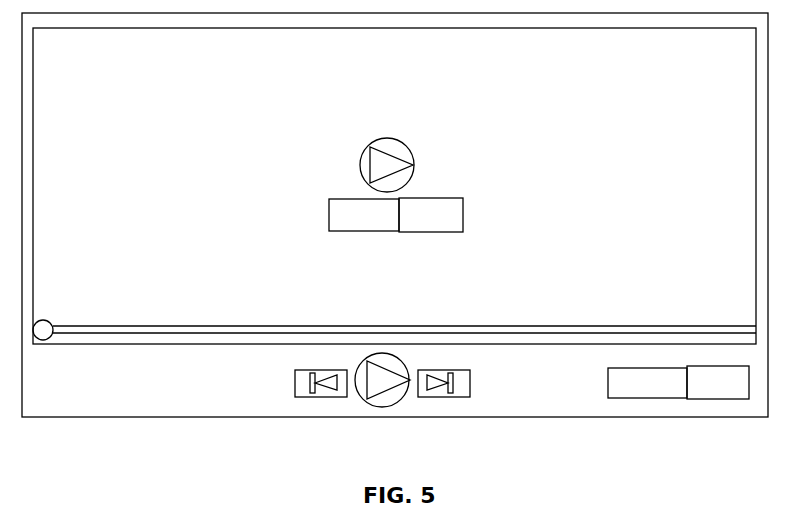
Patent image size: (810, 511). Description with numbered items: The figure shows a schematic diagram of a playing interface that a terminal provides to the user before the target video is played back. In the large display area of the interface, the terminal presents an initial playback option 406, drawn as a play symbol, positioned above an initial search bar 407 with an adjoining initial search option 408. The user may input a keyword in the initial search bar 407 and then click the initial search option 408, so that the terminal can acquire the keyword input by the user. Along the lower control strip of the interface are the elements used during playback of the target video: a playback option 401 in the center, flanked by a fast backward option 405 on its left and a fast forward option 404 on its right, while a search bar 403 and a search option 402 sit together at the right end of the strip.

The playback option 401 is at (382, 407).
The search option 402 is at (717, 399).
The search bar 403 is at (637, 398).
The fast forward option 404 is at (445, 397).
The fast backward option 405 is at (325, 397).
The initial playback option 406 is at (363, 157).
The initial search bar 407 is at (327, 223).
The initial search option 408 is at (445, 232).